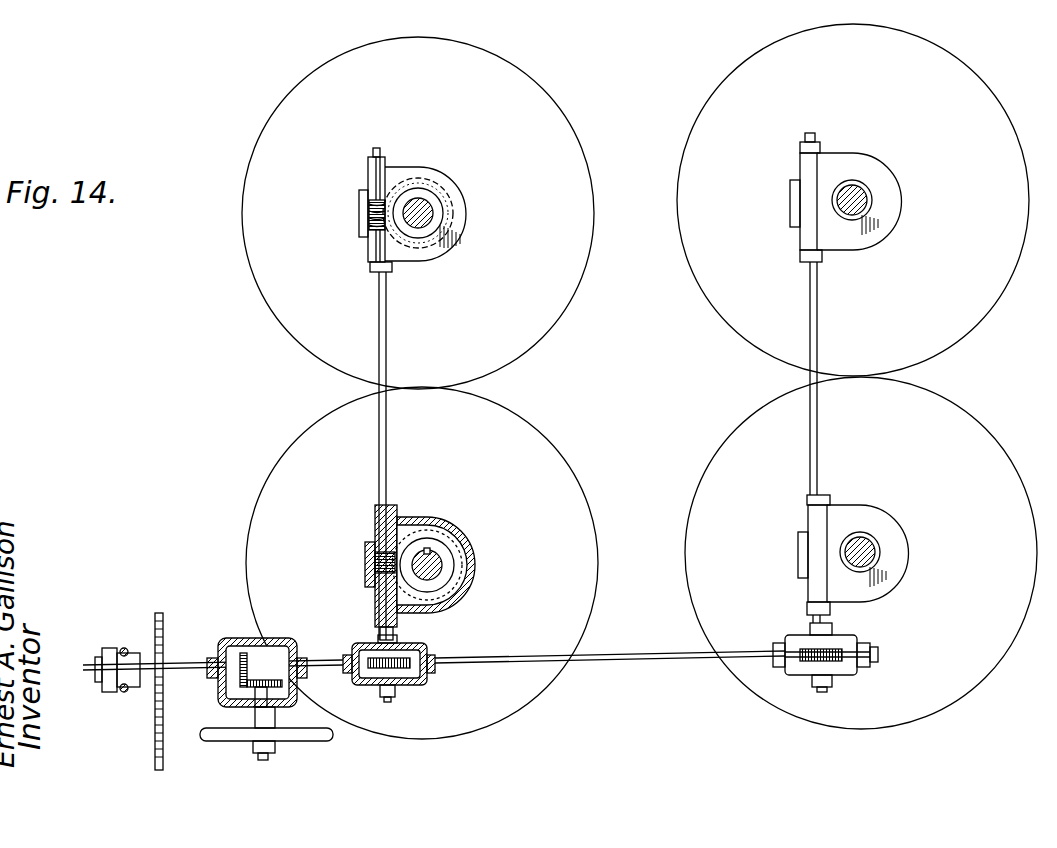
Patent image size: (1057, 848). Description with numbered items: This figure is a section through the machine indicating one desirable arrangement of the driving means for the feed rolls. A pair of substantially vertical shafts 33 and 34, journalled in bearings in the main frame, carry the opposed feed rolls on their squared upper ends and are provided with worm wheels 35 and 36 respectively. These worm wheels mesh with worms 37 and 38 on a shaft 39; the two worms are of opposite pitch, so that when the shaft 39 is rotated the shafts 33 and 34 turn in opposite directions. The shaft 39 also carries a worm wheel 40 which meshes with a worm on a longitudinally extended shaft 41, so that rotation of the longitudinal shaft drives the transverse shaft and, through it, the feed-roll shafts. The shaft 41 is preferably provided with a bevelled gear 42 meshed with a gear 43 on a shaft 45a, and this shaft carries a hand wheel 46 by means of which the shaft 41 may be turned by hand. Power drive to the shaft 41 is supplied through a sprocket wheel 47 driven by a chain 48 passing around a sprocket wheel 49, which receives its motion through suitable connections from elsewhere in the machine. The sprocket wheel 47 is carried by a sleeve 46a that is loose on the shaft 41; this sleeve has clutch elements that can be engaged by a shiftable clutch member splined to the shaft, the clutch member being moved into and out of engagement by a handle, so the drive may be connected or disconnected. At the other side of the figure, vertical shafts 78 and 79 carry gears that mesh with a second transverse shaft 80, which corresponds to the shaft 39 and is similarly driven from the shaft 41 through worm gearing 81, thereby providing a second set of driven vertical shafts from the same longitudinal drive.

The vertical shaft 33 is at (444, 562).
The vertical shaft 34 is at (428, 180).
The worm wheel 35 is at (464, 590).
The worm wheel 36 is at (461, 248).
The worm 37 is at (372, 571).
The worm 38 is at (366, 248).
The shaft 39 is at (388, 472).
The worm wheel 40 is at (402, 657).
The longitudinally extended shaft 41 is at (443, 667).
The bevelled gear 42 is at (244, 646).
The gear 43 is at (238, 688).
The shaft 45a is at (290, 694).
The hand wheel 46 is at (334, 735).
The sleeve 46a is at (131, 648).
The sprocket wheel 47 is at (163, 659).
The chain 48 is at (155, 741).
The sprocket wheel 49 is at (124, 648).
The vertical shaft 78 is at (866, 188).
The vertical shaft 79 is at (870, 547).
The second transverse shaft 80 is at (815, 340).
The worm gearing 81 is at (806, 658).